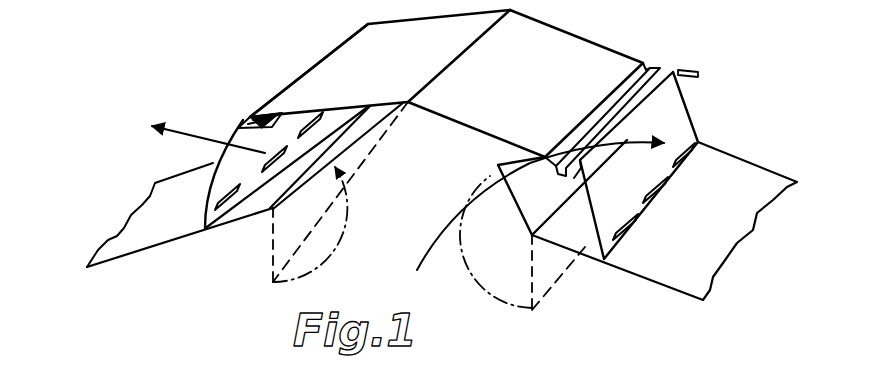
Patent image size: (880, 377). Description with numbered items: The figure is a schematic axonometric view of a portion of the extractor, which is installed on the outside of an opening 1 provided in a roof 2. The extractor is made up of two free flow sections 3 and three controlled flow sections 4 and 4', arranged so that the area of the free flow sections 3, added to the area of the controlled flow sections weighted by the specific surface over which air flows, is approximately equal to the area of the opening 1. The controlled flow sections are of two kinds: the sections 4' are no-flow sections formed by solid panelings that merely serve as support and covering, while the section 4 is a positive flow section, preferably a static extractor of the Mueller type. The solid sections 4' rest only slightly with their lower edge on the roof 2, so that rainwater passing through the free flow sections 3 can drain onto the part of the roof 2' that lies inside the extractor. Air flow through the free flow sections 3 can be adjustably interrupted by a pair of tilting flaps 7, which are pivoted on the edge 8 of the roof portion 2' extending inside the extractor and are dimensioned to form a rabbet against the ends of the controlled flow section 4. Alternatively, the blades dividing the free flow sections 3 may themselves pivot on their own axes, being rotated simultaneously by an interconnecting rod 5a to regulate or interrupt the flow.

The opening 1 is at (421, 195).
The roof 2 is at (442, 215).
The roof portion extending inside the extractor 2' is at (562, 229).
The free flow section 3 is at (242, 118).
The controlled flow section 4 is at (446, 79).
The no-flow controlled flow section 4' is at (440, 181).
The interconnecting rod 5a is at (698, 73).
The tilting flap 7 is at (356, 133).
The edge of the roof portion 8 is at (553, 218).